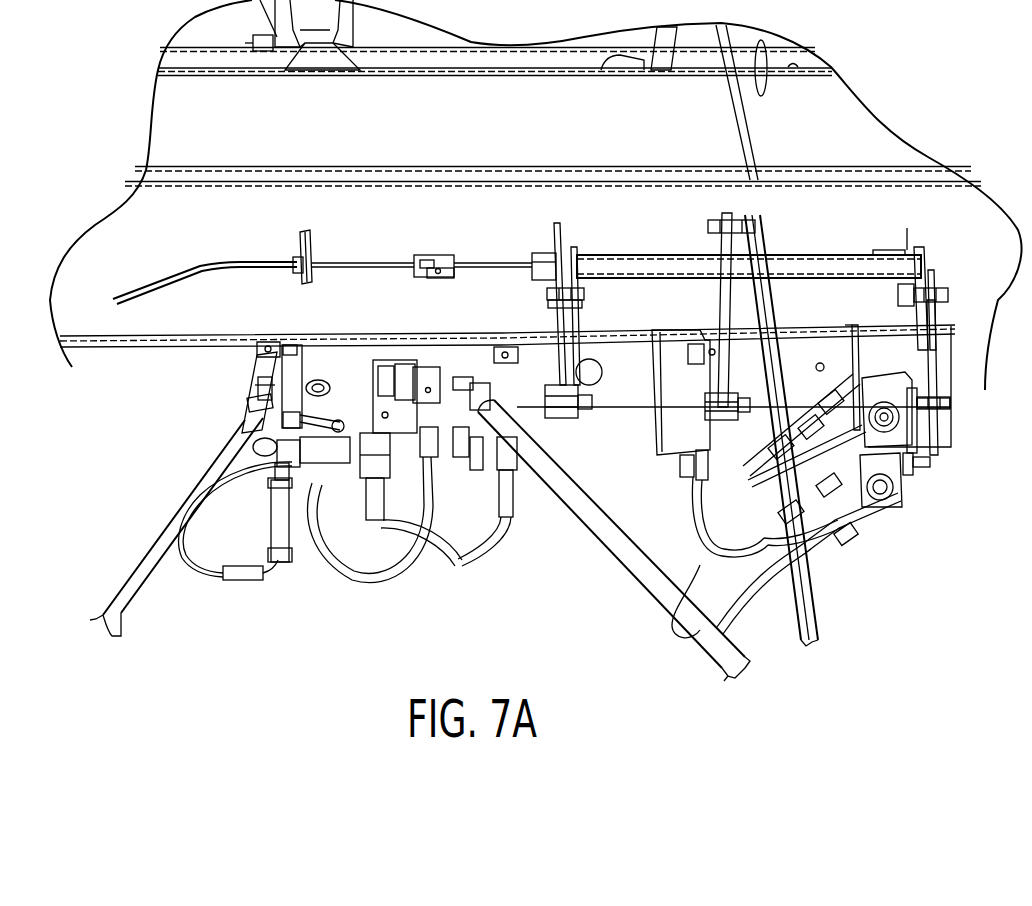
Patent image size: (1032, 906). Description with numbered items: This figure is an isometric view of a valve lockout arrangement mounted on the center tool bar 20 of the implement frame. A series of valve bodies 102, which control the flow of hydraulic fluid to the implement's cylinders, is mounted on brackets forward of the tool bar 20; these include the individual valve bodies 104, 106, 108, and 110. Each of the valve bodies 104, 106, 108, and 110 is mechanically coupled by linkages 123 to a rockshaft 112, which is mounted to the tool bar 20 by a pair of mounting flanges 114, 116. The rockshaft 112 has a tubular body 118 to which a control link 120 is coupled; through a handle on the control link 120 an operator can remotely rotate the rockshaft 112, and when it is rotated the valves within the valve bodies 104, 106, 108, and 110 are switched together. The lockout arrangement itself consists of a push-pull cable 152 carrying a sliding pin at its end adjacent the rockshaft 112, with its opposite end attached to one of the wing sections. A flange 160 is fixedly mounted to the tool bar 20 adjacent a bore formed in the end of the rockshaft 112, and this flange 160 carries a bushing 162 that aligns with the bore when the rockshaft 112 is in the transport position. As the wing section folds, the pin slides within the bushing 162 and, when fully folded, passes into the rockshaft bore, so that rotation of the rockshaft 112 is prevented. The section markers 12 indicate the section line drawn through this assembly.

The tool bar 20 is at (368, 197).
The push-pull cable 152 is at (198, 268).
The bushing 162 is at (541, 254).
The flange 160 is at (558, 246).
The mounting flange 114 is at (554, 289).
The rockshaft 112 is at (800, 269).
The tubular body 118 is at (654, 264).
The section line 12 is at (531, 266).
The mounting flange 116 is at (904, 295).
The control link 120 is at (808, 593).
The linkages 123 is at (563, 384).
The valve body 106 is at (677, 393).
The valve body 110 is at (921, 413).
The valve body 108 is at (888, 473).
The valve bodies 102 is at (420, 511).
The valve body 104 is at (488, 384).